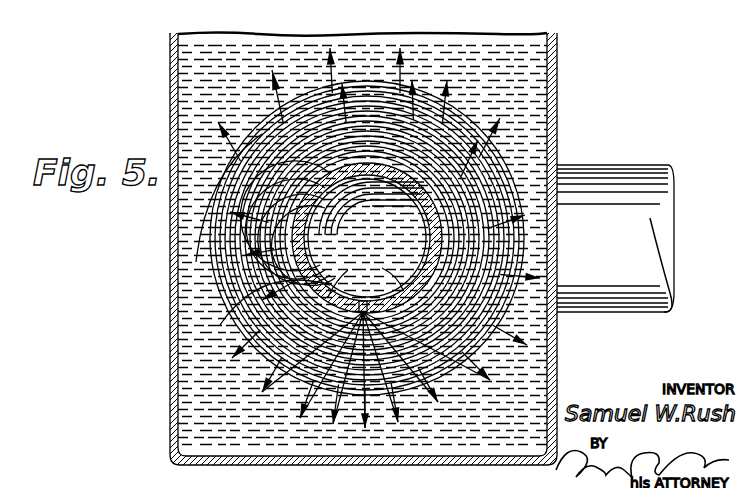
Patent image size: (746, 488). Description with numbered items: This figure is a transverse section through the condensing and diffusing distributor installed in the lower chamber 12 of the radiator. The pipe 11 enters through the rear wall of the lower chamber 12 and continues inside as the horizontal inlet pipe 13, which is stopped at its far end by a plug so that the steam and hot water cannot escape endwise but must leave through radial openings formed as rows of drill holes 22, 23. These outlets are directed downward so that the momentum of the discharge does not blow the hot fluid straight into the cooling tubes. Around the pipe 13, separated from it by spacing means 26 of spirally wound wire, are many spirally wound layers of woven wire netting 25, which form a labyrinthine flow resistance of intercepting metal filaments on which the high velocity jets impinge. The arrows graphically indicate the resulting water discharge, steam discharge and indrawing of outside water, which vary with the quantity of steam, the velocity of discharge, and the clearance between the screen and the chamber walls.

The pipe 11 is at (650, 218).
The lower chamber 12 is at (557, 85).
The horizontal inlet pipe 13 is at (412, 242).
The drill holes 22 is at (363, 301).
The drill holes 23 is at (365, 276).
The wire netting 25 is at (398, 124).
The spacing means 26 is at (320, 172).